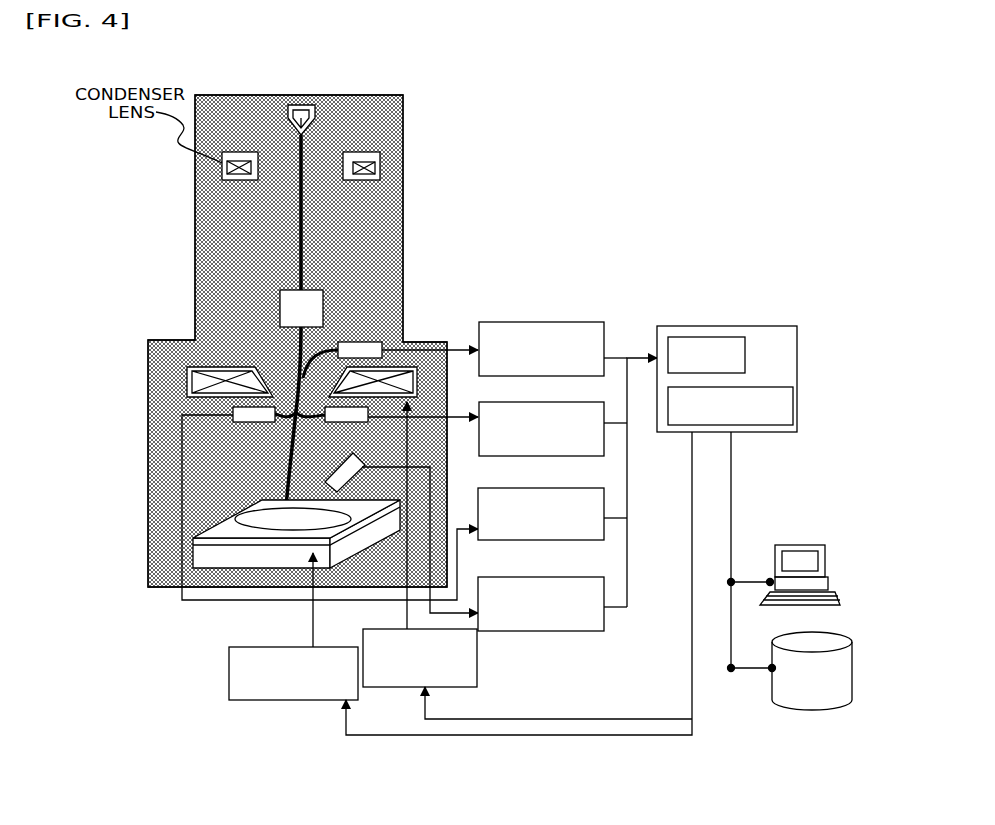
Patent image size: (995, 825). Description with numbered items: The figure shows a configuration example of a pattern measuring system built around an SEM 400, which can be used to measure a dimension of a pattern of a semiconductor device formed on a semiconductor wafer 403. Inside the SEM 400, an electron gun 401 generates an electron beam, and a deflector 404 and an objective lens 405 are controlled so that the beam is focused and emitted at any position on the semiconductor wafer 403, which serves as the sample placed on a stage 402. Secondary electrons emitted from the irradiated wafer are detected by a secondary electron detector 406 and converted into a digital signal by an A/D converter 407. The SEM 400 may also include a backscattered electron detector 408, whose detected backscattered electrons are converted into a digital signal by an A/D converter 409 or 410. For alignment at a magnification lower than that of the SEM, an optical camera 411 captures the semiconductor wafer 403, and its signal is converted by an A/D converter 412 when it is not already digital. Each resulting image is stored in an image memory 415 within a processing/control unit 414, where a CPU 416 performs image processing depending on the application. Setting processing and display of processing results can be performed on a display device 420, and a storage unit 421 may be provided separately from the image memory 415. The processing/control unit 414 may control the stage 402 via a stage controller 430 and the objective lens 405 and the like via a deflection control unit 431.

The SEM 400 is at (403, 107).
The electron gun 401 is at (287, 114).
The stage 402 is at (243, 558).
The semiconductor wafer 403 is at (207, 566).
The deflector 404 is at (278, 305).
The objective lens 405 is at (187, 382).
The secondary electron detector 406 is at (385, 340).
The A/D converter 407 is at (483, 327).
The backscattered electron detector 408 is at (237, 418).
The A/D converter 409 is at (483, 408).
The A/D converter 410 is at (483, 493).
The optical camera 411 is at (330, 480).
The A/D converter 412 is at (483, 583).
The processing/control unit 414 is at (764, 368).
The image memory 415 is at (793, 404).
The CPU 416 is at (745, 350).
The display device 420 is at (805, 545).
The storage unit 421 is at (812, 703).
The stage controller 430 is at (293, 691).
The deflection control unit 431 is at (420, 672).